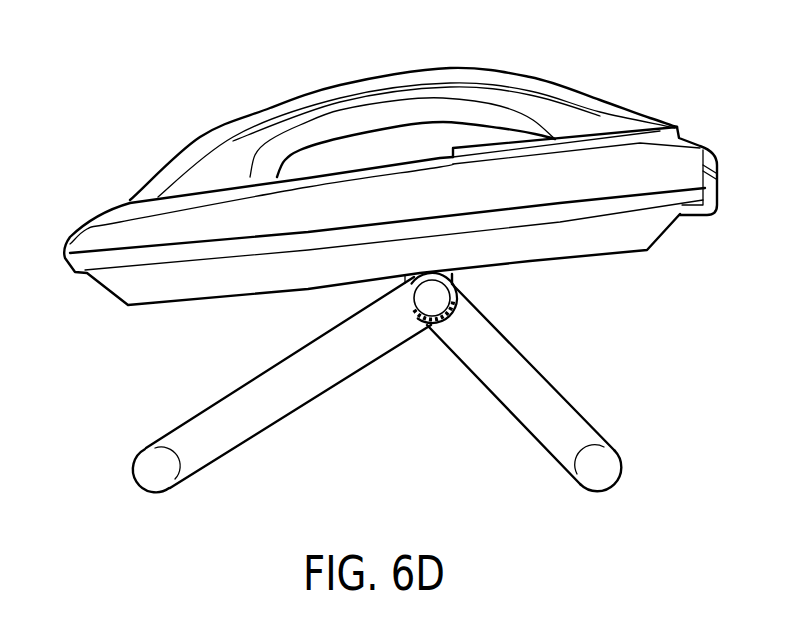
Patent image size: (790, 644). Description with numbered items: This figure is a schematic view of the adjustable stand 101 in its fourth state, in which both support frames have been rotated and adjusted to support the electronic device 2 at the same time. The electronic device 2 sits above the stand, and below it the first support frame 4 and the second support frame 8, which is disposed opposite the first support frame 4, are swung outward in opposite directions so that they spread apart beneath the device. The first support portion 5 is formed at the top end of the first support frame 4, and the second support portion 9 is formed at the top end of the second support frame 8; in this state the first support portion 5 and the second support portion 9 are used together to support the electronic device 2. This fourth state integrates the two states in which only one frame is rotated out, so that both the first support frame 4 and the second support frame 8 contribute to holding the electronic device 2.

The electronic device 2 is at (567, 118).
The first support frame 4 is at (288, 390).
The first support portion 5 is at (182, 460).
The second support frame 8 is at (528, 400).
The second support portion 9 is at (588, 450).
The adjustable stand 101 is at (333, 420).